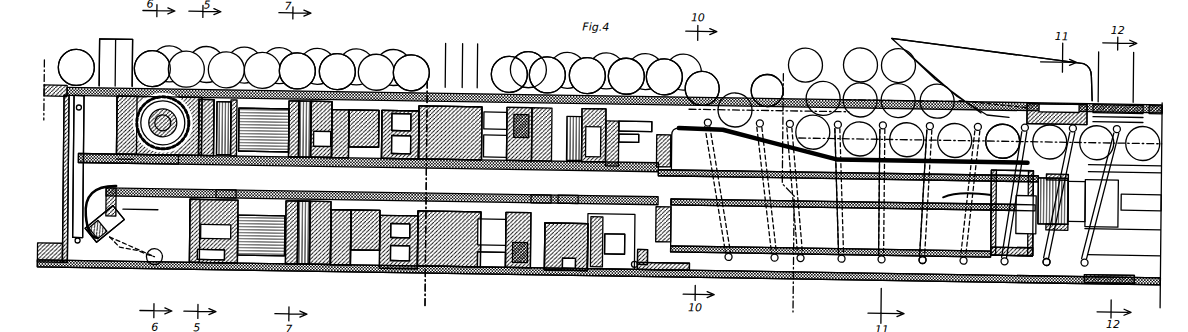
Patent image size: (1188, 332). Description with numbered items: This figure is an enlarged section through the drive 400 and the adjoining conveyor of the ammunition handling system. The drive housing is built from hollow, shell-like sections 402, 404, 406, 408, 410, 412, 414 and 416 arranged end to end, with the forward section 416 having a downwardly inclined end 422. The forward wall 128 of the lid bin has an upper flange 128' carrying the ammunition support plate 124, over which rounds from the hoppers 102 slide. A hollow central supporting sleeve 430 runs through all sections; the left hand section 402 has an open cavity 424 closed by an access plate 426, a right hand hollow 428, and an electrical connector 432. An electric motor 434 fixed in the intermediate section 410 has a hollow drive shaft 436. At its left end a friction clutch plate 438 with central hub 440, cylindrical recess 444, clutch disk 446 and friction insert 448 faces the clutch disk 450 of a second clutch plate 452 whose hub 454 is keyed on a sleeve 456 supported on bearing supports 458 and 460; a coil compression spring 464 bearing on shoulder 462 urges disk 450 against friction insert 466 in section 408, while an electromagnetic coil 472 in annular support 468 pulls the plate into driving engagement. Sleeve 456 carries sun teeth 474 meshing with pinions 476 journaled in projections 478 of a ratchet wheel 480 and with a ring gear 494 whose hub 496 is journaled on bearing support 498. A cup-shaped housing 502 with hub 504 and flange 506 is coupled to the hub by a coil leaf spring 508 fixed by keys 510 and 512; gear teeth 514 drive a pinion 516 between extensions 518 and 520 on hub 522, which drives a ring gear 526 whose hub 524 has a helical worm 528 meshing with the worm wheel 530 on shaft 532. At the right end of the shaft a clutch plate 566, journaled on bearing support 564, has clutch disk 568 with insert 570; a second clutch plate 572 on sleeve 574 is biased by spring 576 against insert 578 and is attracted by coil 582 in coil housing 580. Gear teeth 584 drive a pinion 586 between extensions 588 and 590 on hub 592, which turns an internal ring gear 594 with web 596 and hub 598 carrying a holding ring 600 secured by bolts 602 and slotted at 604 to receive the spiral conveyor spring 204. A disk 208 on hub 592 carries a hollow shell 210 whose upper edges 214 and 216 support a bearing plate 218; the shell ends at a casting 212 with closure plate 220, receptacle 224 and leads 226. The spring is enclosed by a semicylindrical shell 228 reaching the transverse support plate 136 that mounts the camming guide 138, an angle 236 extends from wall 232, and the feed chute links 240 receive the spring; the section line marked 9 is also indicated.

The upper flange 128' is at (75, 54).
The hoppers 102 is at (105, 45).
The worm wheel 530 is at (165, 60).
The pinion 516 is at (230, 96).
The radial extension 520 is at (250, 100).
The key 512 is at (265, 95).
The key 510 is at (292, 96).
The ammunition support plate 124 is at (136, 98).
The radial extension 518 is at (200, 95).
The forward wall 128 is at (48, 179).
The right hand hollow 428 is at (135, 103).
The shaft 532 is at (140, 120).
The central supporting sleeve 430 is at (114, 152).
The open cavity 424 is at (90, 170).
The access plate 426 is at (80, 193).
The hub 524 is at (118, 158).
The central hub 522 is at (165, 158).
The central hub 504 is at (218, 158).
The bearing support 498 is at (262, 158).
The gear teeth 514 is at (228, 190).
The helical worm 528 is at (140, 208).
The electrical connector 432 is at (112, 248).
The left hand section 402 is at (190, 260).
The ring gear 526 is at (198, 262).
The rotatable cup-shaped housing 502 is at (218, 262).
The peripheral flange 506 is at (252, 258).
The coil leaf spring 508 is at (242, 262).
The section 404 is at (285, 262).
The central hub 496 is at (275, 262).
The pinions 476 is at (320, 100).
The clutch disk 450 is at (345, 98).
The annular friction insert 448 is at (380, 98).
The electromagnetic coil 472 is at (388, 98).
The ring gear 494 is at (297, 96).
The annular friction insert 466 is at (337, 96).
The annular support 468 is at (405, 96).
The friction insert 570 is at (530, 98).
The clutch disk 568 is at (508, 96).
The second clutch plate 572 is at (546, 96).
The clutch disk 446 is at (412, 112).
The shoulder 462 is at (412, 130).
The friction clutch plate 438 is at (420, 138).
The bearing support 458 is at (330, 153).
The hub 454 is at (356, 153).
The sleeve 456 is at (385, 153).
The central hub 440 is at (392, 153).
The clutch plate 566 is at (462, 162).
The bearing support 564 is at (520, 162).
The teeth 474 is at (308, 192).
The coil compression spring 464 is at (338, 192).
The bearing support 460 is at (368, 192).
The coil compression spring 576 is at (545, 192).
The sleeve 574 is at (565, 192).
The hollow drive shaft 436 is at (440, 205).
The cylindrical recess 444 is at (455, 214).
The second clutch plate 452 is at (450, 230).
The gear teeth 584 is at (560, 225).
The section 406 is at (318, 262).
The section 408 is at (348, 262).
The intermediate section 410 is at (392, 262).
The electric motor 434 is at (437, 262).
The ratchet wheel 480 is at (335, 262).
The projections 478 is at (375, 262).
The annular coil housing 580 is at (496, 262).
The drive 400 is at (470, 262).
The electromagnetic coil 582 is at (512, 262).
The section 412 is at (545, 262).
The section line 9 is at (350, 295).
The radial extension 588 is at (595, 96).
The radial extension 590 is at (624, 96).
The slot 604 is at (670, 96).
The downwardly inclined forward end 422 is at (690, 100).
The elongated angle 236 is at (753, 98).
The holding ring 600 is at (625, 113).
The bolts 602 is at (628, 128).
The pinion 586 is at (590, 163).
The central hub 592 is at (648, 166).
The disk 208 is at (675, 212).
The radial web portion 596 is at (637, 252).
The central hub 598 is at (648, 240).
The internal ring gear 594 is at (588, 262).
The friction insert 578 is at (575, 262).
The section 414 is at (620, 262).
The forward section 416 is at (652, 262).
The hollow shell 210 is at (771, 259).
The spiral conveyor spring 204 is at (822, 248).
The upper edge 216 is at (845, 150).
The ammunition camming guide 138 is at (1025, 34).
The transverse support plate 136 is at (1050, 90).
The leads 226 is at (1000, 141).
The bearing plate 218 is at (875, 160).
The upper edge 214 is at (917, 160).
The closure plate 220 is at (1030, 224).
The electrical receptacle 224 is at (1060, 210).
The semicylindrical shell 228 is at (920, 260).
The casting 212 is at (1035, 245).
The wall 232 is at (1058, 262).
The links 240 is at (1136, 271).